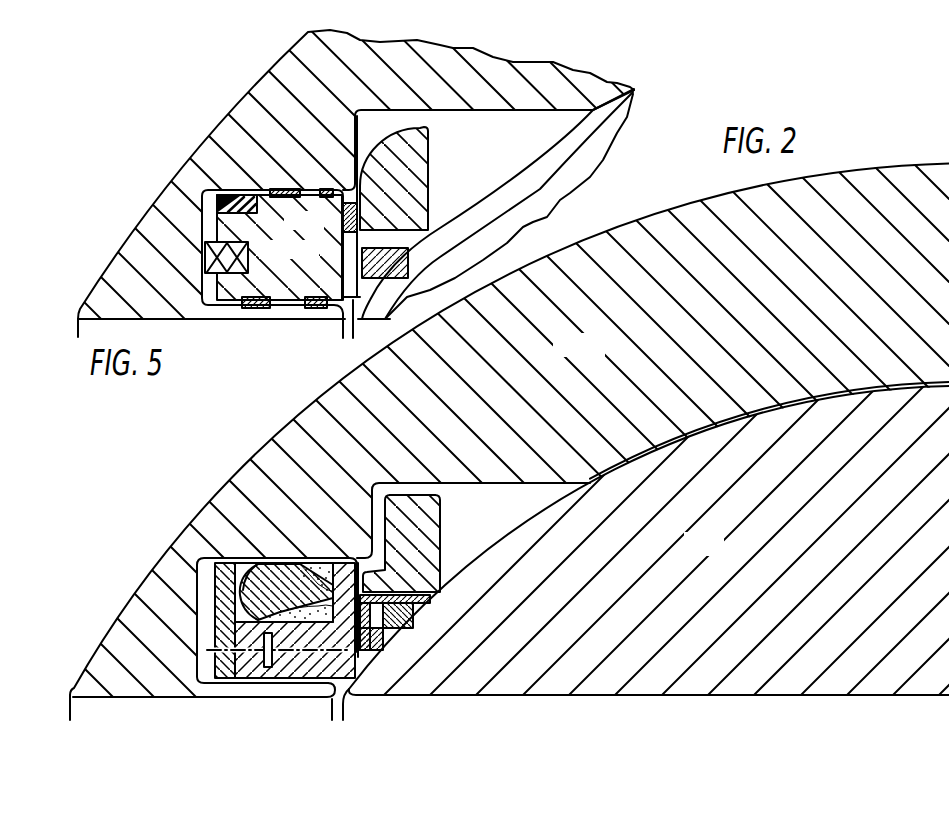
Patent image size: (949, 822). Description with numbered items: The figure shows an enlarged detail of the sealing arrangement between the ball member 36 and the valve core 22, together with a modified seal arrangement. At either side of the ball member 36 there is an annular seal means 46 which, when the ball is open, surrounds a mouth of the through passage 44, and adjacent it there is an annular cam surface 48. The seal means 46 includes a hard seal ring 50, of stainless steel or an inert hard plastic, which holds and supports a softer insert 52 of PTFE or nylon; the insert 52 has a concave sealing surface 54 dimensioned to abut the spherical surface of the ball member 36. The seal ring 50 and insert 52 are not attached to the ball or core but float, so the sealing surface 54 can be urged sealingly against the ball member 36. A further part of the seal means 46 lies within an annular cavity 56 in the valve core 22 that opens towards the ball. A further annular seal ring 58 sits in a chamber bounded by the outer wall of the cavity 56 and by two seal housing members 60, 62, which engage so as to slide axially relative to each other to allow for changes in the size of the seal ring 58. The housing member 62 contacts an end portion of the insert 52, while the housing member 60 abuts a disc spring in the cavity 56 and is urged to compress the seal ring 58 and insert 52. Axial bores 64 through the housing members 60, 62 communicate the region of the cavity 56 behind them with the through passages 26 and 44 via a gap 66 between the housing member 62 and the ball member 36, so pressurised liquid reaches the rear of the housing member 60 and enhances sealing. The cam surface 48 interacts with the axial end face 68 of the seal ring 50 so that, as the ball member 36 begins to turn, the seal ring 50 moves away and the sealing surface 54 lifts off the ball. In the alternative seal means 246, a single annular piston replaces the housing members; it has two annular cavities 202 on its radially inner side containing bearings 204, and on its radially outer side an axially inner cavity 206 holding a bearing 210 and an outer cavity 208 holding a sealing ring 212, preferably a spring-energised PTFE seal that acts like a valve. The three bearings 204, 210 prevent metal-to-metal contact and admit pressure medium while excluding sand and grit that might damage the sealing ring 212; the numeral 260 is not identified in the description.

In FIG. 2, the valve core 22 is at (474, 411).
In FIG. 2, the through passage 26 is at (138, 698).
In FIG. 2, the ball member 36 is at (603, 411).
In FIG. 2, the through passage 44 is at (514, 696).
In FIG. 2, the seal means 46 is at (251, 572).
In FIG. 5, the cam surface 48 is at (500, 174).
In FIG. 2, the seal ring 50 is at (420, 540).
In FIG. 2, the insert 52 is at (416, 608).
In FIG. 2, the sealing surface 54 is at (417, 600).
In FIG. 2, the annular cavity 56 is at (237, 565).
In FIG. 2, the seal ring 58 is at (284, 562).
In FIG. 2, the seal housing member 60 is at (213, 571).
In FIG. 2, the seal housing member 62 is at (332, 628).
In FIG. 2, the axial bores 64 is at (287, 652).
In FIG. 2, the gap 66 is at (348, 698).
In FIG. 2, the axial end face 68 is at (440, 503).
In FIG. 5, the annular cavities 202 is at (295, 309).
In FIG. 5, the bearings 204 is at (315, 310).
In FIG. 5, the annular cavity 206 is at (339, 233).
In FIG. 5, the annular cavity 208 is at (200, 205).
In FIG. 5, the bearing 210 is at (345, 152).
In FIG. 5, the sealing ring 212 is at (227, 192).
In FIG. 5, the seal means 246 is at (254, 240).
In FIG. 5, the seal body 260 is at (273, 247).